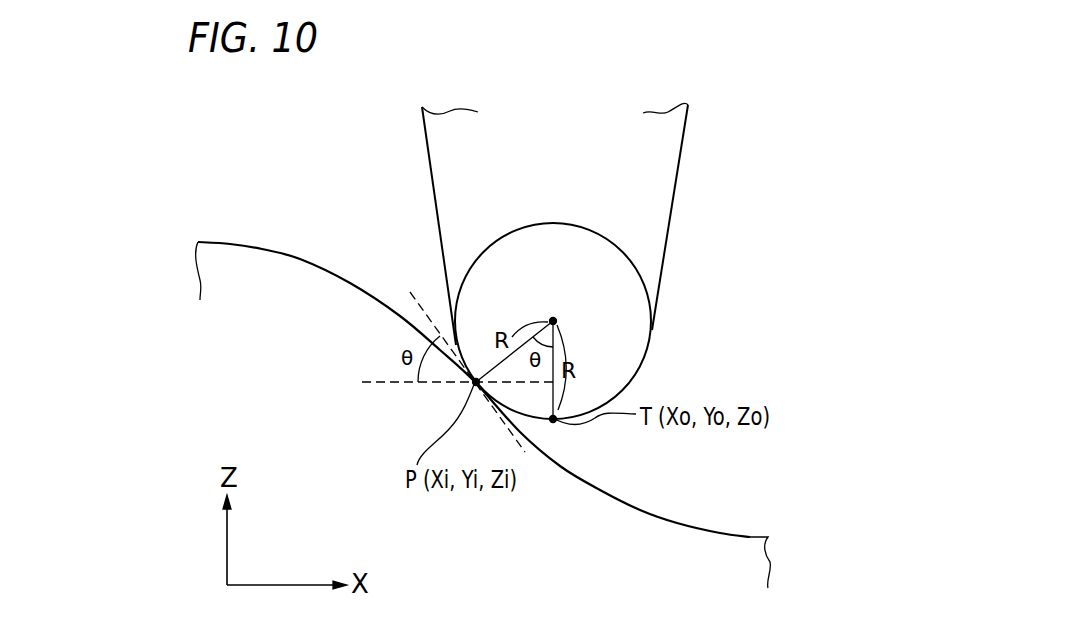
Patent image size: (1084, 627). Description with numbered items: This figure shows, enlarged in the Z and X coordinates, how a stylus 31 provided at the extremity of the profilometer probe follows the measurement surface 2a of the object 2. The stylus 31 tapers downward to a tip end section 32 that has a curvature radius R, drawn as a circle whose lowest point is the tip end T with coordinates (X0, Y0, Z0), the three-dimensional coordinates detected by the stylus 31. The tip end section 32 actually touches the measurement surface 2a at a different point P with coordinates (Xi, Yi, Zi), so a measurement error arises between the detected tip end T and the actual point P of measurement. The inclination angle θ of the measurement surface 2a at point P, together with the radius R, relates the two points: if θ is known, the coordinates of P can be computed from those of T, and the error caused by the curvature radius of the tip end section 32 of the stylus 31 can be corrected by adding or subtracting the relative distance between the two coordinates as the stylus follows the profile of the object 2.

The stylus 31 is at (682, 163).
The tip end section 32 is at (640, 302).
The measurement surface 2a is at (677, 523).
The object 2 is at (750, 537).